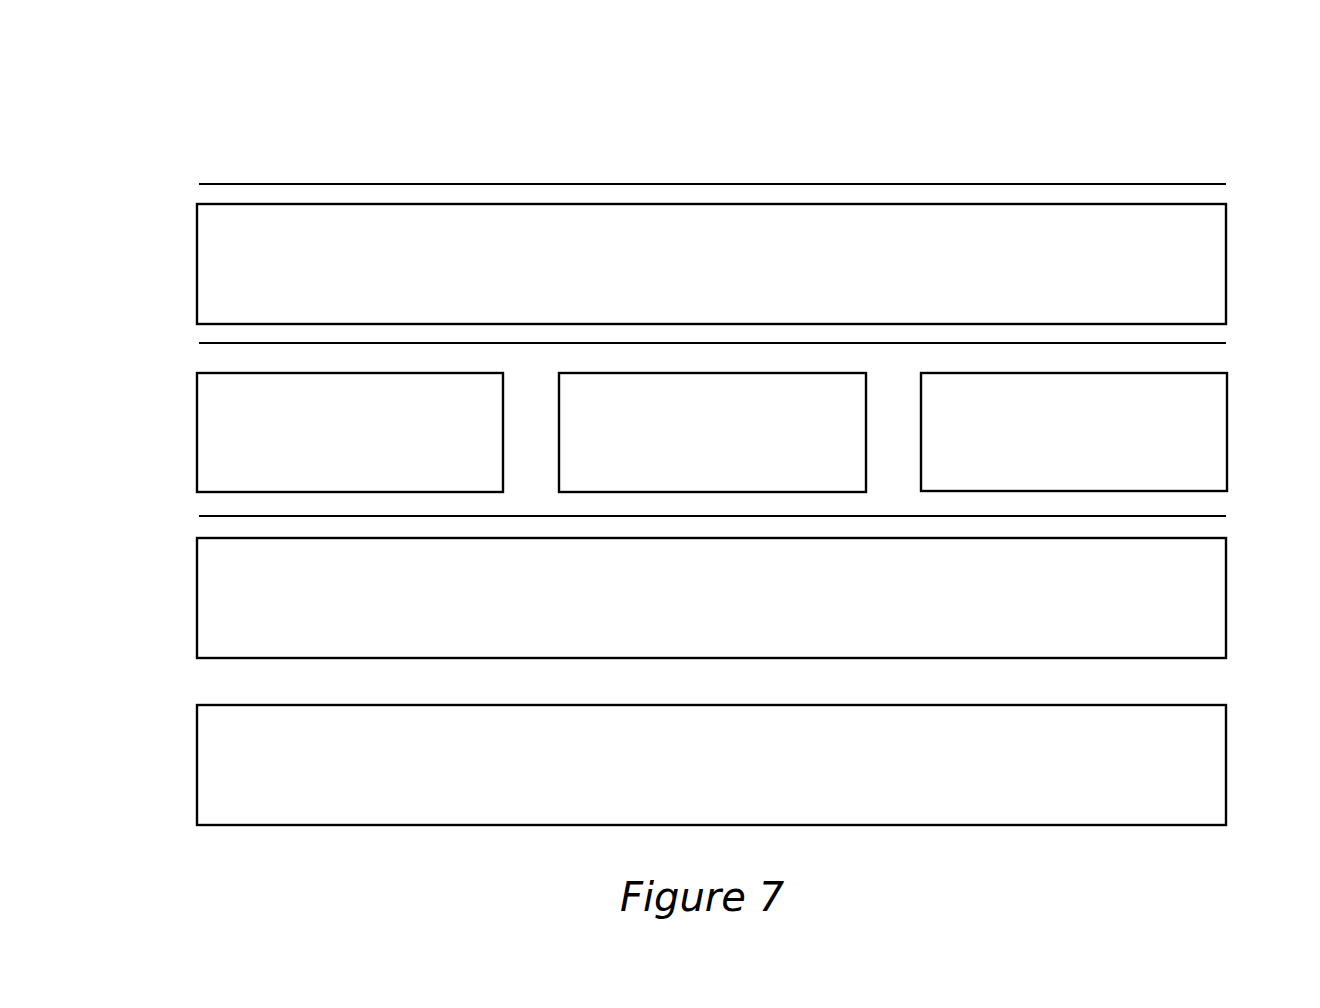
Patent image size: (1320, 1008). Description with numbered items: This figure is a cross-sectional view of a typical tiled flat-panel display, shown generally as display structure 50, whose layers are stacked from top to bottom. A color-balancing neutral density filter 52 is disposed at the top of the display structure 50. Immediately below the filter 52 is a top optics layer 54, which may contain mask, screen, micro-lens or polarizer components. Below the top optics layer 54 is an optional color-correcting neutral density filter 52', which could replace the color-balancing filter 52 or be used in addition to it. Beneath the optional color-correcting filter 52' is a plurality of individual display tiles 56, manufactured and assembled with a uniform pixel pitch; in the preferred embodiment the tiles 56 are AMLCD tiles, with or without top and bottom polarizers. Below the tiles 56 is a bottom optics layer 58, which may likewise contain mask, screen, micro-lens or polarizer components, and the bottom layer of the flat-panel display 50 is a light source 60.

The tiled flat-panel display structure 50 is at (254, 108).
The color-balancing neutral density filter 52 is at (712, 154).
The top optics layer 54 is at (1203, 203).
The color-correcting neutral density filter 52' is at (757, 395).
The display tiles 56 is at (358, 452).
The bottom optics layer 58 is at (1227, 606).
The light source 60 is at (1227, 780).